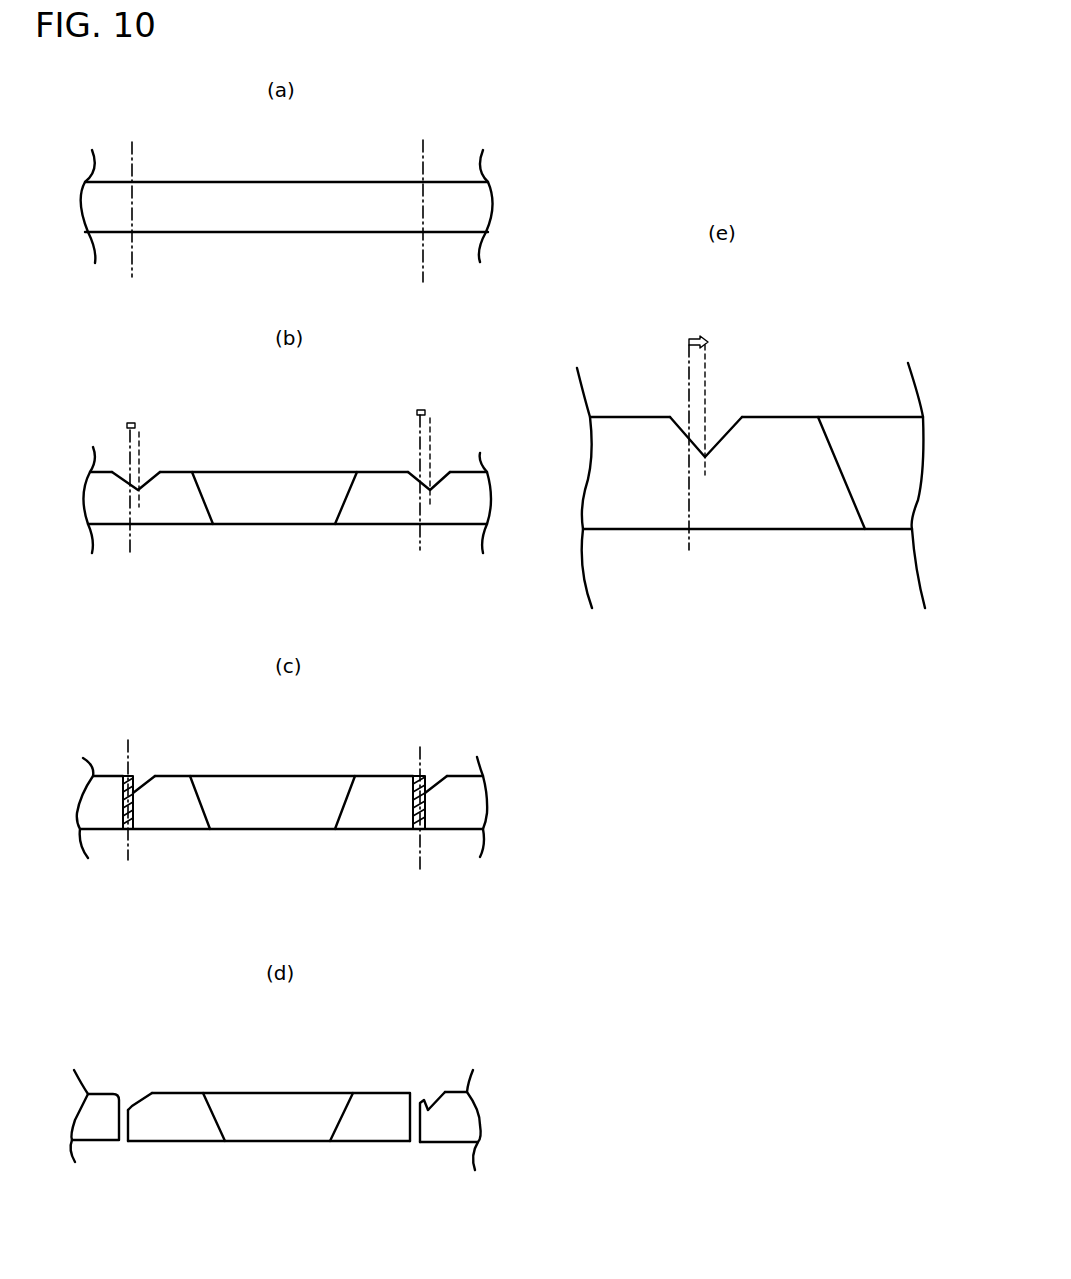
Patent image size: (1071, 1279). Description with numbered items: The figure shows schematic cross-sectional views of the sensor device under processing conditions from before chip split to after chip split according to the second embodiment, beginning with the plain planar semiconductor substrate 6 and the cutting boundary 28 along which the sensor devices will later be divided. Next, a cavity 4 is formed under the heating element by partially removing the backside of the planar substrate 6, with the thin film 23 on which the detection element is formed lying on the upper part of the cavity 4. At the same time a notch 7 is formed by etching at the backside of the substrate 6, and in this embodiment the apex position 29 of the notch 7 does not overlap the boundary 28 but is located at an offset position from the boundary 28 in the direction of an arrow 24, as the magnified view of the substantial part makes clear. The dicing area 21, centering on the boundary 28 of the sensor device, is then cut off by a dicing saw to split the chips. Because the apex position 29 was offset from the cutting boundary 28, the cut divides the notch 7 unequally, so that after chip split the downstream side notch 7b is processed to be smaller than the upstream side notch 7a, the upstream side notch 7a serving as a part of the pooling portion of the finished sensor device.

The cavity 4 is at (262, 500).
The planar semiconductor substrate 6 is at (312, 202).
The notch 7 is at (143, 470).
The upstream side notch 7a is at (133, 1108).
The downstream side notch 7b is at (410, 1092).
The dicing area 21 is at (135, 813).
The thin film 23 is at (250, 525).
The arrow 24 is at (130, 422).
The cutting boundary 28 is at (133, 163).
The apex position 29 is at (140, 437).